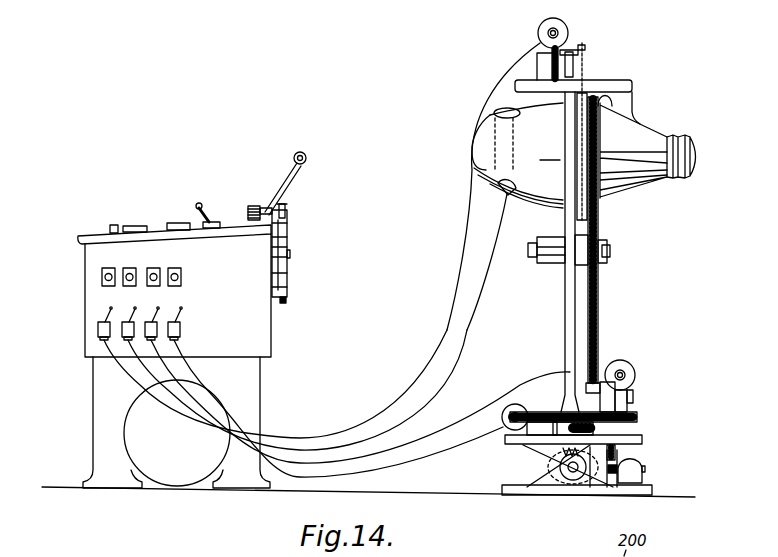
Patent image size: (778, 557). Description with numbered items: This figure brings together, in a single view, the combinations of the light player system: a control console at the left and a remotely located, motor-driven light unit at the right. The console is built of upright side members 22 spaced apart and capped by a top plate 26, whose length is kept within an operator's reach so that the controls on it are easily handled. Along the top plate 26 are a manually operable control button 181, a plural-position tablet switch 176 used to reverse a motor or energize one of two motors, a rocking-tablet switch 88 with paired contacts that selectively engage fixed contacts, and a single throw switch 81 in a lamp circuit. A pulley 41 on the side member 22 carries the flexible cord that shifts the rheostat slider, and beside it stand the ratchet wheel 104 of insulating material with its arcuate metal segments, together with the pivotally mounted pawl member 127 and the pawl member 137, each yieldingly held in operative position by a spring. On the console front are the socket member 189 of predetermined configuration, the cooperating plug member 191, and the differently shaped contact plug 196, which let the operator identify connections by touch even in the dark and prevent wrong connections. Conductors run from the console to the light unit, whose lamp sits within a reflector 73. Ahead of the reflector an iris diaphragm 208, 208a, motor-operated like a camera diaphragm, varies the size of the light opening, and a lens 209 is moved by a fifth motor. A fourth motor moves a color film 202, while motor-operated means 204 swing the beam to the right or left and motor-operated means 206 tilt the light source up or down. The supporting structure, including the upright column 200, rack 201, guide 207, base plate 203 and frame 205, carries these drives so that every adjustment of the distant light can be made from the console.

The upright side member 22 is at (268, 351).
The top plate 26 is at (86, 233).
The manually operable control button 181 is at (114, 226).
The plural-position tablet switch 176 is at (141, 227).
The rocking-tablet switch 88 is at (190, 213).
The single throw switch 81 is at (207, 211).
The pulley 41 is at (267, 205).
The pawl member 127 is at (286, 209).
The ratchet wheel 104 is at (287, 270).
The pawl member 137 is at (287, 299).
The socket member 189 is at (102, 276).
The contact plug 196 is at (134, 275).
The plug member 191 is at (98, 330).
The reflector 73 is at (471, 131).
The iris diaphragm 208 is at (568, 27).
The iris diaphragm 208a is at (586, 50).
The guide rail 207 is at (590, 91).
The lens 209 is at (698, 143).
The column 200 is at (565, 288).
The rack 201 is at (598, 289).
The color film 202 is at (636, 374).
The motor-operated means for swinging the light source 204 is at (540, 398).
The base plate 203 is at (637, 443).
The support frame 205 is at (538, 478).
The motor-operated means for tilting the light source 206 is at (643, 463).